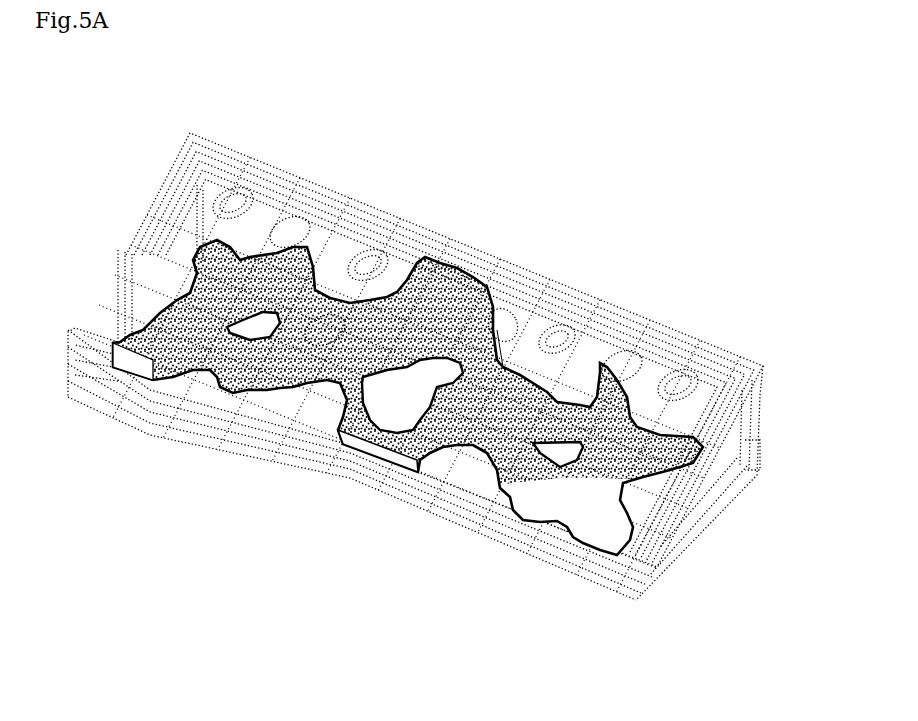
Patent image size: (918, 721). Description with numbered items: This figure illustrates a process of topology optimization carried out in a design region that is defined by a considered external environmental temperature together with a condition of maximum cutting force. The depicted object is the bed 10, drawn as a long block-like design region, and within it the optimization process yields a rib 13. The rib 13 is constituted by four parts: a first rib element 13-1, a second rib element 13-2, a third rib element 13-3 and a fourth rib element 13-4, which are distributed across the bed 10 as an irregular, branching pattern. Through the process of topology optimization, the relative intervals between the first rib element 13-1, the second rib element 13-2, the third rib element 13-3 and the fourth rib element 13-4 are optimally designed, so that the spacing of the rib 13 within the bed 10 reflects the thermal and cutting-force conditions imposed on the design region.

The bed 10 is at (313, 168).
The rib 13 is at (447, 263).
The first rib element 13-1 is at (200, 330).
The second rib element 13-2 is at (303, 320).
The third rib element 13-3 is at (503, 365).
The fourth rib element 13-4 is at (578, 495).